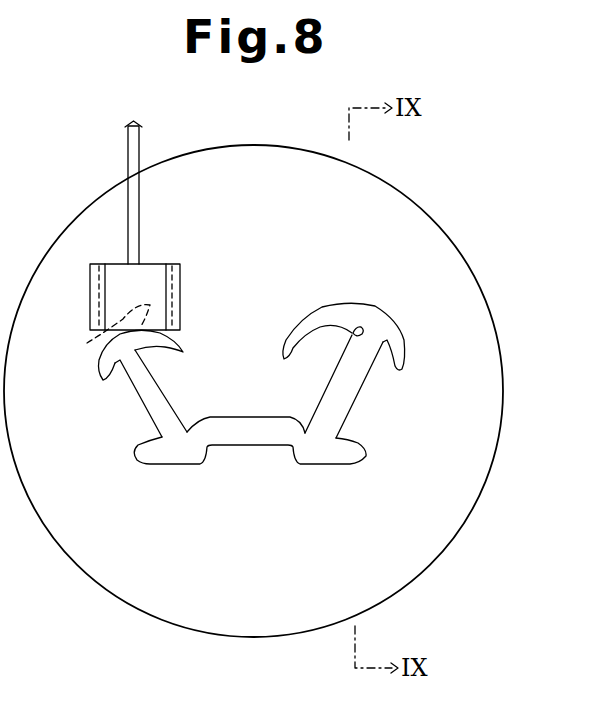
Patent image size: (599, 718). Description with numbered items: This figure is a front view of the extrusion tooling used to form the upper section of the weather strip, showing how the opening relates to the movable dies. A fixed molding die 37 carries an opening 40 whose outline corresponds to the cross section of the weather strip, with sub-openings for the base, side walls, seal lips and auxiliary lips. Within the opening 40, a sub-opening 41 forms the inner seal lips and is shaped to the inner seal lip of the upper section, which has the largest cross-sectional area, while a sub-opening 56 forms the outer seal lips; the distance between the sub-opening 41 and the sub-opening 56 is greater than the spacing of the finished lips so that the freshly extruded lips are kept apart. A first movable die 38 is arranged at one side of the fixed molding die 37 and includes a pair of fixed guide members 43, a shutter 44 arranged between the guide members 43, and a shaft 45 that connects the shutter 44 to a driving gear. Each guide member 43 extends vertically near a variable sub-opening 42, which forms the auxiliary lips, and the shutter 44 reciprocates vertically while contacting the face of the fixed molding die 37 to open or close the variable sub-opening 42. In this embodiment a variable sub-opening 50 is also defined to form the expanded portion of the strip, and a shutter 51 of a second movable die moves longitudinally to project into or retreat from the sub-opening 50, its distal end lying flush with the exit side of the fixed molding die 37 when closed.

The fixed molding die 37 is at (498, 420).
The first movable die 38 is at (128, 151).
The opening 40 is at (254, 447).
The sub-opening 41 is at (333, 328).
The variable sub-opening 42 is at (98, 337).
The fixed guide members 43 is at (180, 276).
The shutter 44 is at (120, 264).
The shaft 45 is at (139, 205).
The variable sub-opening 50 is at (360, 328).
The shutter 51 is at (353, 345).
The sub-opening 56 is at (161, 344).